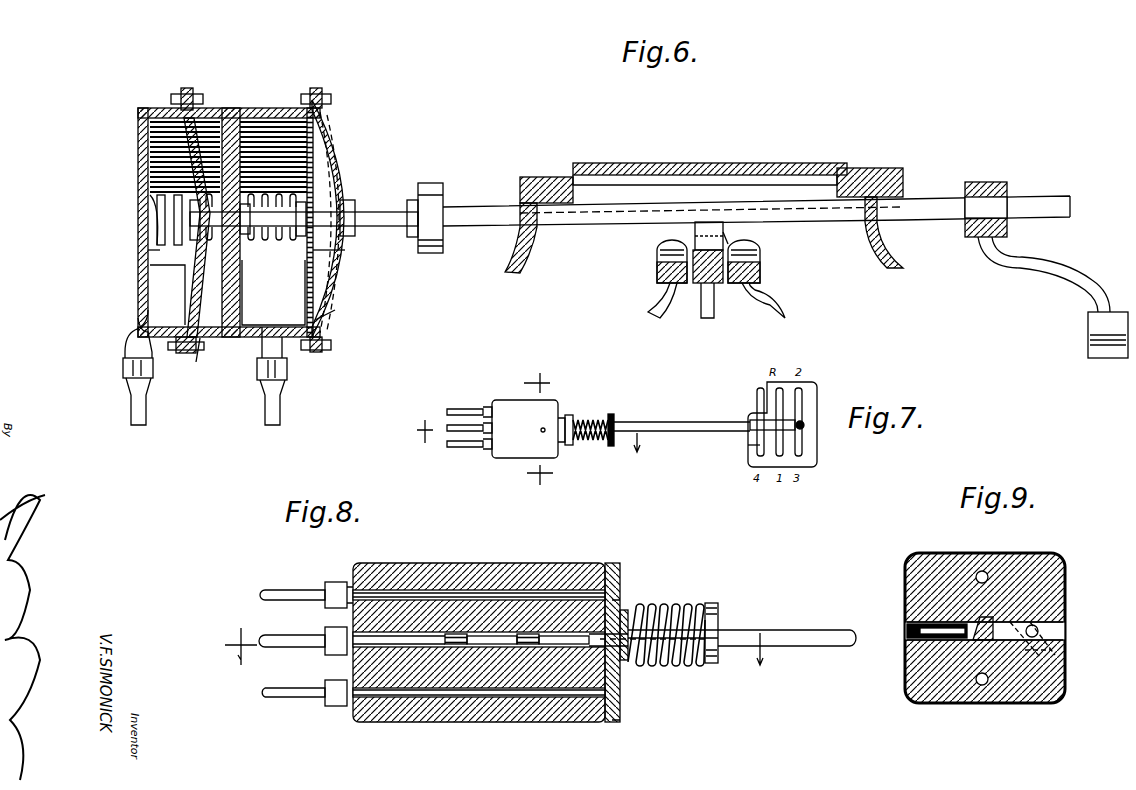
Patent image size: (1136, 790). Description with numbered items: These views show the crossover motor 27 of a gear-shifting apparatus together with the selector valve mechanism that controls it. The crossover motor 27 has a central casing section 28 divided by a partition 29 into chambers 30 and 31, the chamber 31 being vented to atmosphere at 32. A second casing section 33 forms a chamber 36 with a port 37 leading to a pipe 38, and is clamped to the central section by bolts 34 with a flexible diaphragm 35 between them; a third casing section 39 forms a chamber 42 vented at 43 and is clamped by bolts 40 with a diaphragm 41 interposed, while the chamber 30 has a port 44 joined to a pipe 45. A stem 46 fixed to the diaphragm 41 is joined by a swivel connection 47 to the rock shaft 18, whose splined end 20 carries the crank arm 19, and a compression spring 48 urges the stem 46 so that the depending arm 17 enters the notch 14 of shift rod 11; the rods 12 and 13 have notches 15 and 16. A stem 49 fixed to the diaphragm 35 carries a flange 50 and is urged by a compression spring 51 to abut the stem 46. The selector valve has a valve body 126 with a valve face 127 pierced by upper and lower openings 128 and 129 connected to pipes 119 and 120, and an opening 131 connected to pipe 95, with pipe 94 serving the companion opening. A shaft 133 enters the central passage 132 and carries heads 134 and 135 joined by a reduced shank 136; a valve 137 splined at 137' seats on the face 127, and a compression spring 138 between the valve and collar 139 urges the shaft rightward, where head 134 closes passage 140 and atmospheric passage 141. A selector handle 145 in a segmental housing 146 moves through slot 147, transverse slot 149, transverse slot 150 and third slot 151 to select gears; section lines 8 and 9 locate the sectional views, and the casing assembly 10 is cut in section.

In FIG. 6, the casing 10 is at (852, 167).
In FIG. 8, the casing 10 is at (481, 656).
In FIG. 6, the shift rod 11 is at (762, 270).
In FIG. 6, the shift rod 12 is at (699, 300).
In FIG. 6, the shift rod 13 is at (655, 272).
In FIG. 6, the notch 14 is at (760, 248).
In FIG. 6, the notch 15 is at (737, 250).
In FIG. 6, the notch 16 is at (662, 258).
In FIG. 6, the depending arm 17 is at (697, 236).
In FIG. 6, the rock shaft 18 is at (757, 212).
In FIG. 6, the crank arm 19 is at (1062, 278).
In FIG. 6, the spline 20 is at (1000, 195).
In FIG. 6, the crossover motor 27 is at (252, 106).
In FIG. 6, the central casing section 28 is at (240, 338).
In FIG. 6, the partition 29 is at (265, 296).
In FIG. 6, the chamber 30 is at (273, 292).
In FIG. 6, the chamber 31 is at (201, 227).
In FIG. 6, the vent 32 is at (199, 363).
In FIG. 6, the second casing section 33 is at (148, 158).
In FIG. 6, the bolts 34 is at (192, 90).
In FIG. 6, the flexible diaphragm 35 is at (196, 276).
In FIG. 6, the chamber 36 is at (160, 256).
In FIG. 6, the port 37 is at (138, 328).
In FIG. 6, the pipe 38 is at (128, 408).
In FIG. 6, the third casing section 39 is at (345, 150).
In FIG. 6, the bolts 40 is at (325, 96).
In FIG. 6, the diaphragm 41 is at (335, 278).
In FIG. 6, the chamber 42 is at (340, 176).
In FIG. 6, the vent 43 is at (332, 322).
In FIG. 6, the port 44 is at (277, 302).
In FIG. 6, the pipe 45 is at (283, 407).
In FIG. 6, the stem 46 is at (386, 238).
In FIG. 6, the swivel connection 47 is at (440, 184).
In FIG. 6, the compression spring 48 is at (270, 207).
In FIG. 6, the stem 49 is at (295, 236).
In FIG. 6, the flange 50 is at (250, 236).
In FIG. 6, the compression spring 51 is at (150, 188).
In FIG. 7, the section line 8 is at (517, 446).
In FIG. 7, the section line 9 is at (538, 429).
In FIG. 7, the pipe 94 is at (466, 448).
In FIG. 7, the pipe 95 is at (466, 408).
In FIG. 8, the pipe 95 is at (290, 650).
In FIG. 7, the pipe 119 is at (440, 412).
In FIG. 8, the pipe 119 is at (296, 590).
In FIG. 8, the pipe 120 is at (297, 698).
In FIG. 7, the valve body 126 is at (510, 460).
In FIG. 8, the valve body 126 is at (410, 553).
In FIG. 9, the valve body 126 is at (1052, 570).
In FIG. 7, the valve face 127 is at (562, 404).
In FIG. 8, the valve face 127 is at (620, 565).
In FIG. 8, the upper opening 128 is at (513, 590).
In FIG. 9, the upper opening 128 is at (985, 571).
In FIG. 8, the lower opening 129 is at (500, 700).
In FIG. 9, the lower opening 129 is at (982, 686).
In FIG. 9, the opening 131 is at (928, 625).
In FIG. 8, the central passage 132 is at (395, 638).
In FIG. 7, the shaft 133 is at (673, 420).
In FIG. 8, the shaft 133 is at (741, 628).
In FIG. 8, the head 134 is at (455, 633).
In FIG. 8, the head 135 is at (563, 600).
In FIG. 9, the head 135 is at (975, 640).
In FIG. 8, the reduced shank 136 is at (487, 633).
In FIG. 7, the valve 137 is at (581, 445).
In FIG. 8, the valve 137 is at (628, 677).
In FIG. 8, the spline 137' is at (641, 647).
In FIG. 7, the compression spring 138 is at (600, 415).
In FIG. 8, the compression spring 138 is at (677, 665).
In FIG. 7, the flange or collar 139 is at (618, 418).
In FIG. 8, the flange or collar 139 is at (712, 603).
In FIG. 7, the passage 140 is at (763, 390).
In FIG. 9, the passage 140 is at (950, 622).
In FIG. 7, the atmospheric passage 141 is at (543, 433).
In FIG. 9, the atmospheric passage 141 is at (1055, 650).
In FIG. 7, the selector handle 145 is at (810, 420).
In FIG. 7, the segmental housing 146 is at (815, 458).
In FIG. 7, the slot 147 is at (806, 388).
In FIG. 7, the transverse slot 149 is at (785, 406).
In FIG. 7, the transverse slot 150 is at (750, 432).
In FIG. 7, the third slot 151 is at (750, 450).